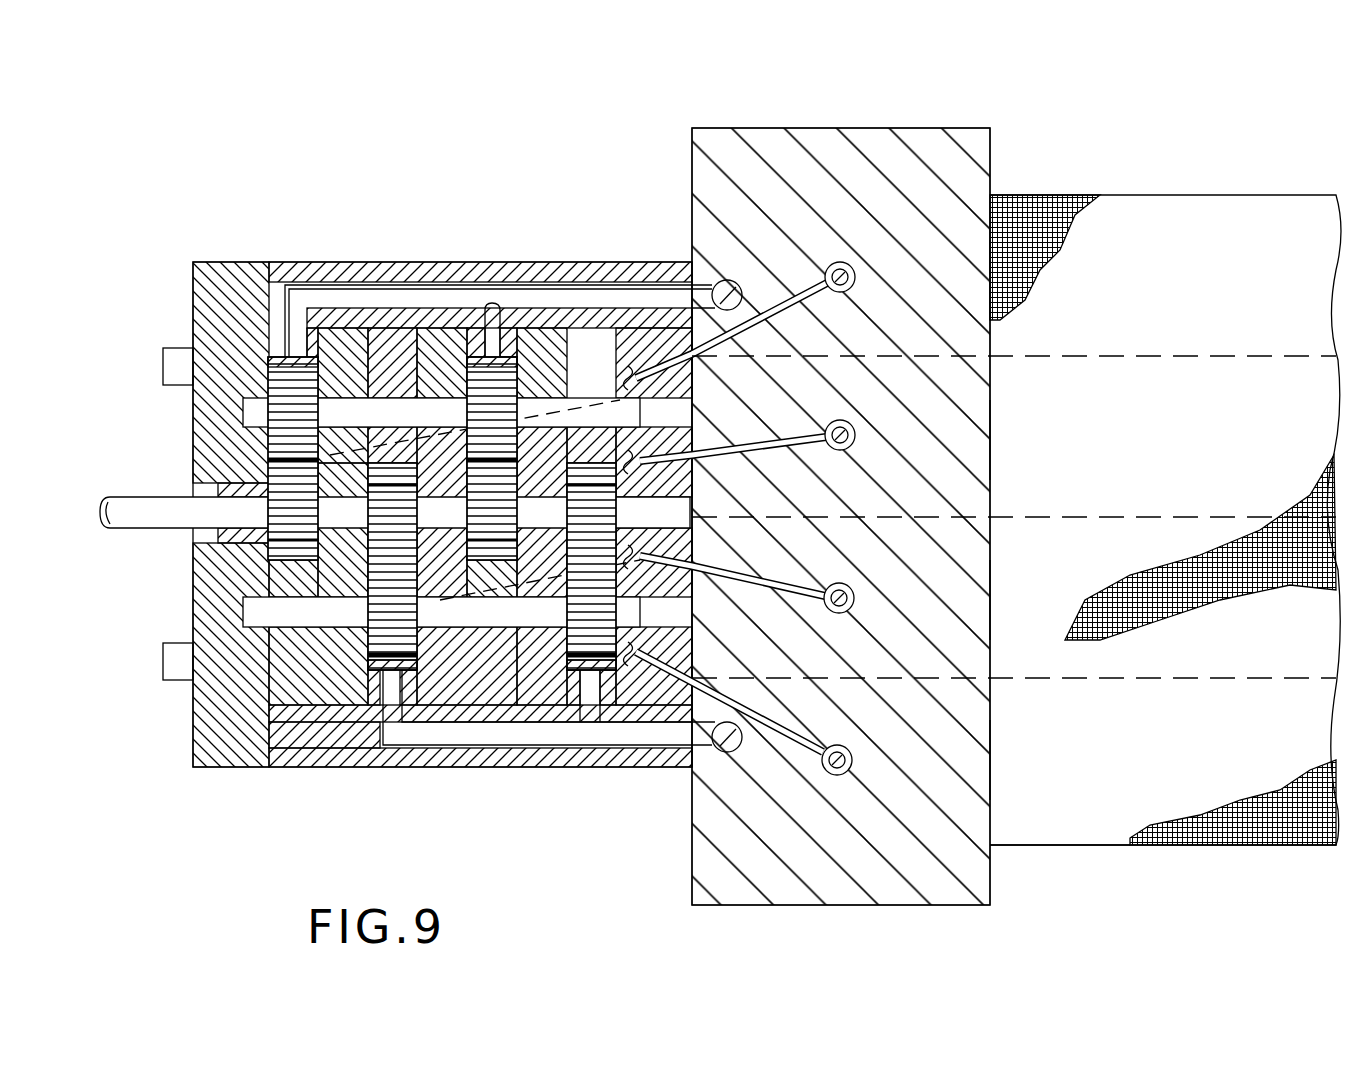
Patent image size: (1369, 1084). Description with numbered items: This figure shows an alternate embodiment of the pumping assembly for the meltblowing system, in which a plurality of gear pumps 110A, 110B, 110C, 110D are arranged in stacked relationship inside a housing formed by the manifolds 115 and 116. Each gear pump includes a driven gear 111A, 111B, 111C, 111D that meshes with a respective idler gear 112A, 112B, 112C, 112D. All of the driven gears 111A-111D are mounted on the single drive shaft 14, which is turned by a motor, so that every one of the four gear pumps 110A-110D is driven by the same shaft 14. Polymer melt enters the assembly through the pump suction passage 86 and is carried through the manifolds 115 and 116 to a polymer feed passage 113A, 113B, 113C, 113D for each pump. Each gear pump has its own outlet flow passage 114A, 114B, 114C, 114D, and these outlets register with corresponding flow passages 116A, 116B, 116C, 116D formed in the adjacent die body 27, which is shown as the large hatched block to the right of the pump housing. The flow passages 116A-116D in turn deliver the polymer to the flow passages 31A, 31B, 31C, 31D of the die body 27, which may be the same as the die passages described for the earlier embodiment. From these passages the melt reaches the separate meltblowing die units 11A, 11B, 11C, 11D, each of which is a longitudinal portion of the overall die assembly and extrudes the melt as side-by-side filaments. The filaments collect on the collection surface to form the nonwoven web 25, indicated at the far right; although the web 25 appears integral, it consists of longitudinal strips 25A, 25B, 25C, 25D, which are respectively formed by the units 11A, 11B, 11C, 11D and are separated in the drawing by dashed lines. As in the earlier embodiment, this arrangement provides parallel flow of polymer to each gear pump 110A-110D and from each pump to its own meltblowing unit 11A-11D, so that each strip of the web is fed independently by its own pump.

The drive shaft 14 is at (125, 507).
The nonwoven web 25 is at (1250, 188).
The longitudinal strip 25A is at (1090, 795).
The longitudinal strip 25B is at (1014, 648).
The longitudinal strip 25C is at (1014, 471).
The longitudinal strip 25D is at (1014, 307).
The die body 27 is at (993, 128).
The flow passage 31A is at (848, 750).
The flow passage 31B is at (850, 590).
The flow passage 31C is at (851, 426).
The flow passage 31D is at (851, 267).
The die assembly 11A is at (950, 760).
The die assembly 11B is at (945, 597).
The die assembly 11C is at (955, 440).
The die assembly 11D is at (955, 277).
The pump suction passage 86 is at (715, 282).
The gear pump 110A is at (365, 642).
The gear pump 110B is at (553, 644).
The gear pump 110C is at (458, 378).
The gear pump 110D is at (290, 388).
The driven gear 111A is at (368, 570).
The driven gear 111B is at (568, 570).
The driven gear 111C is at (468, 500).
The driven gear 111D is at (275, 488).
The idler gear 112A is at (385, 652).
The idler gear 112B is at (562, 660).
The idler gear 112C is at (485, 375).
The idler gear 112D is at (293, 393).
The polymer feed passage 113A is at (395, 700).
The polymer feed passage 113B is at (590, 690).
The polymer feed passage 113C is at (500, 345).
The polymer feed passage 113D is at (296, 345).
The outlet flow passage 114A is at (680, 665).
The outlet flow passage 114B is at (705, 540).
The outlet flow passage 114C is at (665, 450).
The outlet flow passage 114D is at (648, 362).
The manifold 115 is at (487, 272).
The manifold 116 is at (307, 750).
The flow passage 116A is at (783, 730).
The flow passage 116B is at (778, 588).
The flow passage 116C is at (803, 407).
The flow passage 116D is at (780, 313).